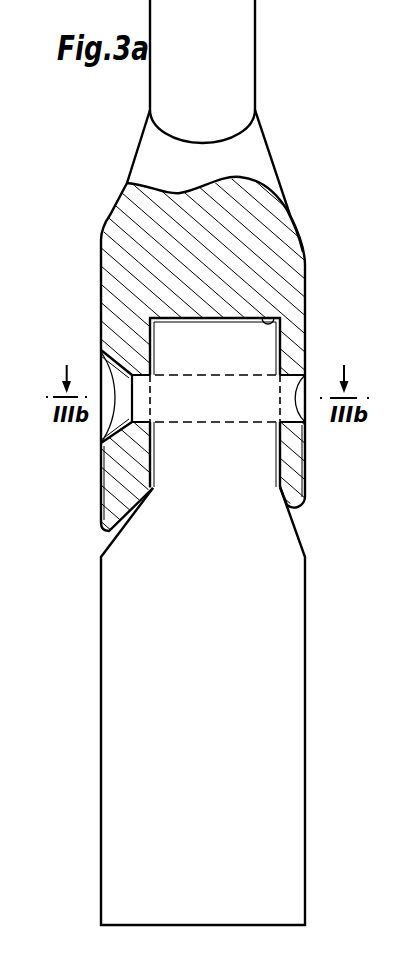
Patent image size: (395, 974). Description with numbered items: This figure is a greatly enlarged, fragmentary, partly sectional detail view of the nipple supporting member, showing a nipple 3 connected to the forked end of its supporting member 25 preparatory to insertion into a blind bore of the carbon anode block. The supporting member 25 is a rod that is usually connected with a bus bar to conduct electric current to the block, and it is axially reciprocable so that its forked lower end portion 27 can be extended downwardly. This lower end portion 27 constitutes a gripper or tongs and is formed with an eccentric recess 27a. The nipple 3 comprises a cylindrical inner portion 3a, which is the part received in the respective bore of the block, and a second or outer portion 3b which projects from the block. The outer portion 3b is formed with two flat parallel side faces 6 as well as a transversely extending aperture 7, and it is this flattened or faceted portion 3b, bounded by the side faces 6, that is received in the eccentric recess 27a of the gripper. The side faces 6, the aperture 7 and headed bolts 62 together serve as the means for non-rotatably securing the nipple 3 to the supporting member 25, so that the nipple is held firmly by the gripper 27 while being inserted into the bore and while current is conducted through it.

The nipple-supporting member 25 is at (235, 62).
The forked lower end portion 27 is at (283, 228).
The eccentric recess 27a is at (280, 318).
The outer portion 3b is at (265, 343).
The aperture 7 is at (257, 392).
The headed bolt 62 is at (110, 421).
The side faces 6 is at (150, 325).
The inner portion 3a is at (295, 653).
The nipple 3 is at (307, 733).